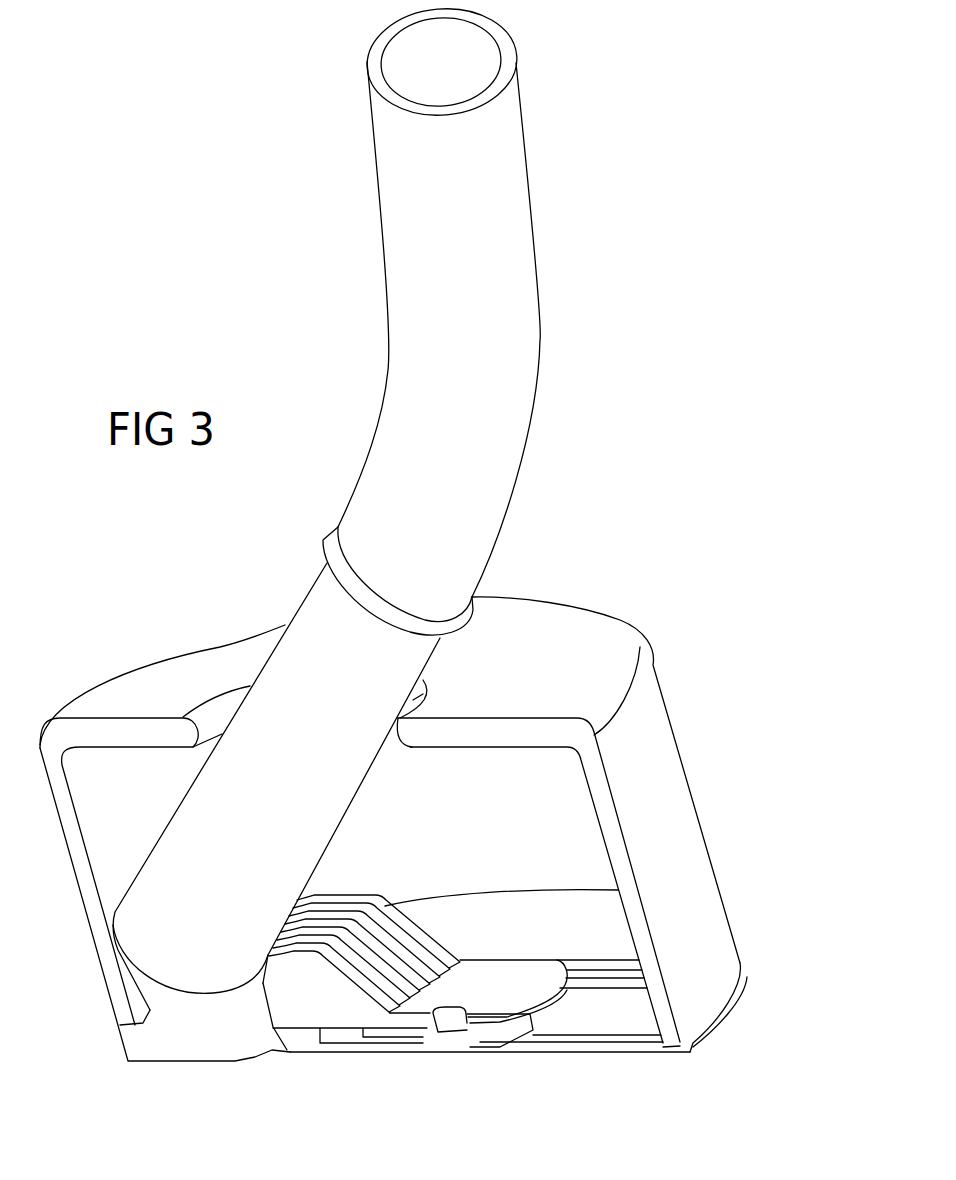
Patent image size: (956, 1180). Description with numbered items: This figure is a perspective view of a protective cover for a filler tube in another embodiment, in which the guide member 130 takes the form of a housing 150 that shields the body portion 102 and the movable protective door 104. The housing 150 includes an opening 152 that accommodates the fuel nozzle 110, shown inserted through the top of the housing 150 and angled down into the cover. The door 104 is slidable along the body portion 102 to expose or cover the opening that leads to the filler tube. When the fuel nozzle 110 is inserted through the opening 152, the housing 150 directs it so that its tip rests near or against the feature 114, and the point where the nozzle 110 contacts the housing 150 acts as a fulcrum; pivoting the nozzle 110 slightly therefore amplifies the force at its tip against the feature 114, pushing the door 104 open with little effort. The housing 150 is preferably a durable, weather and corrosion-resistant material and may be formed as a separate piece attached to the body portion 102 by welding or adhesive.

The fuel nozzle 110 is at (520, 366).
The guide member 130 is at (724, 636).
The opening 152 is at (393, 745).
The body portion 102 is at (167, 1062).
The feature 114 is at (296, 993).
The movable protective door 104 is at (440, 1050).
The housing 150 is at (696, 1029).